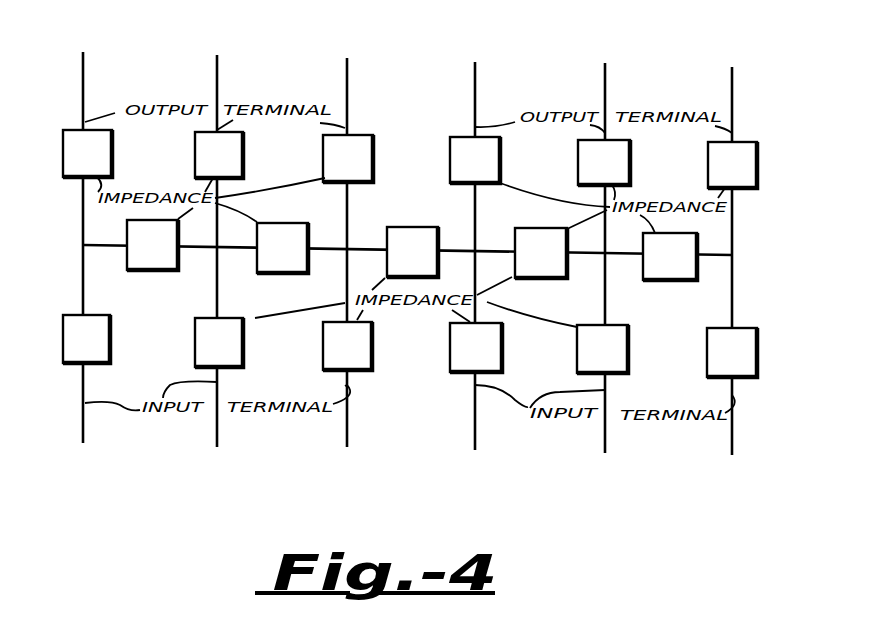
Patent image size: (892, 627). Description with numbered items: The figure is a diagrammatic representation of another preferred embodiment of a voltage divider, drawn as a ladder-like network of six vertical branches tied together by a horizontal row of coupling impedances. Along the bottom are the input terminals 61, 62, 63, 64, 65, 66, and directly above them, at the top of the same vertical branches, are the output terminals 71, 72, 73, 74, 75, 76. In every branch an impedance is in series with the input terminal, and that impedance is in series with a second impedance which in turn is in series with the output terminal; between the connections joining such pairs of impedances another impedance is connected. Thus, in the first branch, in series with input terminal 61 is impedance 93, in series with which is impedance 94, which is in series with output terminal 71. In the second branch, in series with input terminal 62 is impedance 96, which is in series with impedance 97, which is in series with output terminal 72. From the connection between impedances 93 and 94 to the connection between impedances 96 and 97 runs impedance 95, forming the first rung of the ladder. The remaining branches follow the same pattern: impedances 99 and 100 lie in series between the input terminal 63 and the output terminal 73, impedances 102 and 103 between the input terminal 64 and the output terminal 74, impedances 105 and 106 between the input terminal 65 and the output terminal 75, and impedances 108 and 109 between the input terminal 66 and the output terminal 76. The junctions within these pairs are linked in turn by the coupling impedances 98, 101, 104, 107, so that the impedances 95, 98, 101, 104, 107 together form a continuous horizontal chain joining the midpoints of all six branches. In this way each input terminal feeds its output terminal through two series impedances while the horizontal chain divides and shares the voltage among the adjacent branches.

The input terminal 61 is at (80, 415).
The input terminal 62 is at (217, 418).
The input terminal 63 is at (348, 420).
The input terminal 64 is at (473, 422).
The input terminal 65 is at (600, 423).
The input terminal 66 is at (728, 425).
The output terminal 71 is at (85, 82).
The output terminal 72 is at (217, 84).
The output terminal 73 is at (352, 87).
The output terminal 74 is at (472, 90).
The output terminal 75 is at (606, 92).
The output terminal 76 is at (723, 94).
The impedance 93 is at (86, 339).
The impedance 94 is at (87, 153).
The impedance 95 is at (152, 245).
The impedance 96 is at (219, 342).
The impedance 97 is at (219, 155).
The impedance 98 is at (282, 248).
The impedance 99 is at (347, 346).
The impedance 100 is at (348, 158).
The impedance 101 is at (412, 252).
The impedance 102 is at (476, 347).
The impedance 103 is at (475, 160).
The impedance 104 is at (541, 253).
The impedance 105 is at (602, 349).
The impedance 106 is at (604, 162).
The impedance 107 is at (670, 256).
The impedance 108 is at (732, 352).
The impedance 109 is at (732, 165).